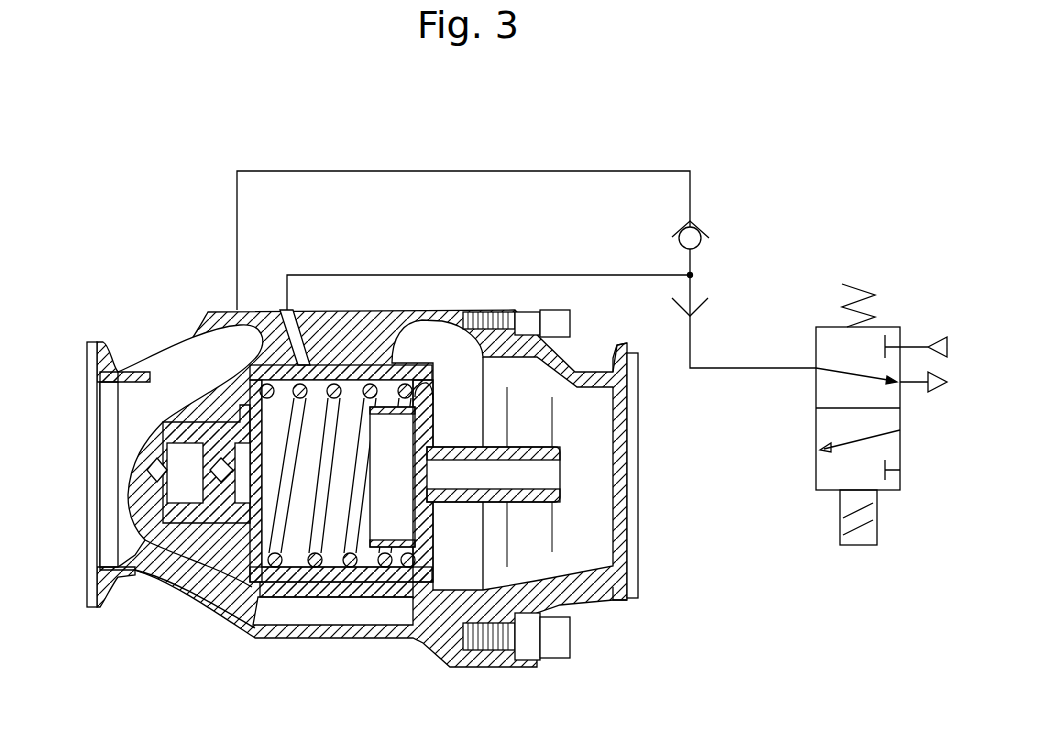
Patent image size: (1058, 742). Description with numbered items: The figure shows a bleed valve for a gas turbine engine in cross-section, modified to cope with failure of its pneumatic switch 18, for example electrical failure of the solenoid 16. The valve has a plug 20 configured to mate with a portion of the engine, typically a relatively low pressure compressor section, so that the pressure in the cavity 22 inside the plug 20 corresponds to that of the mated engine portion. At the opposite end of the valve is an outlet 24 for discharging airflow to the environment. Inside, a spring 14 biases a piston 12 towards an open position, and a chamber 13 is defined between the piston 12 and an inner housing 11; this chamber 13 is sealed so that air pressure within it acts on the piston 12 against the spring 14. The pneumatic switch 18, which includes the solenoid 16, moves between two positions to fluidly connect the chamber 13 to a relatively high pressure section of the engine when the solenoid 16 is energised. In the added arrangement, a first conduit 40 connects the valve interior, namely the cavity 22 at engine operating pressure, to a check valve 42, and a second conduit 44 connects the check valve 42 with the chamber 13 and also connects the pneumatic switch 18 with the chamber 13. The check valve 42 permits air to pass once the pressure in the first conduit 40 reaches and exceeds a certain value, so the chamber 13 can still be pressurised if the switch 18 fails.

The inner housing 11 is at (208, 550).
The piston 12 is at (377, 583).
The chamber 13 is at (258, 585).
The spring 14 is at (308, 555).
The solenoid 16 is at (877, 533).
The pneumatic switch 18 is at (884, 279).
The plug 20 is at (85, 552).
The cavity 22 is at (117, 410).
The outlet 24 is at (622, 602).
The first conduit 40 is at (370, 171).
The check valve 42 is at (705, 222).
The second conduit 44 is at (522, 275).